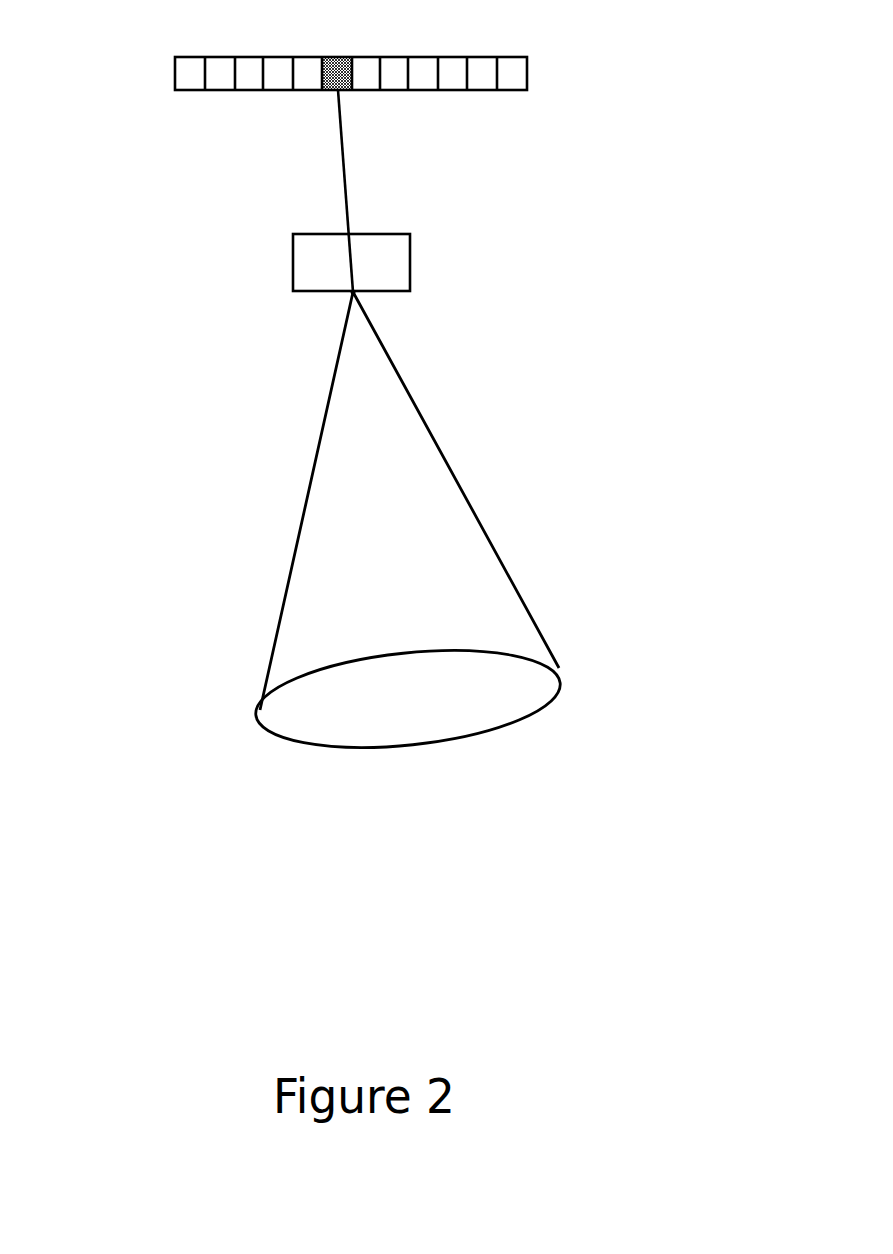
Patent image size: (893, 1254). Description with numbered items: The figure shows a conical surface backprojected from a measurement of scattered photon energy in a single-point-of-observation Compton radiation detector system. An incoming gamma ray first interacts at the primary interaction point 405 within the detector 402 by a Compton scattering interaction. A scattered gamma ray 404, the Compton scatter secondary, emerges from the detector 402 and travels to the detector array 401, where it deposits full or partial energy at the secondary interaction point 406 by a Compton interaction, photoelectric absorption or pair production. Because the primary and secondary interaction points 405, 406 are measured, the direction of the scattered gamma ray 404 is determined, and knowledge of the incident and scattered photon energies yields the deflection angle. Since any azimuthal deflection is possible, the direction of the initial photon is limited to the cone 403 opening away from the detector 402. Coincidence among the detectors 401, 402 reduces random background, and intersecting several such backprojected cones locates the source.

The detector array 401 is at (289, 72).
The detector 402 is at (298, 262).
The cone 403 is at (408, 526).
The scattered gamma ray 404 is at (379, 191).
The primary interaction point 405 is at (353, 292).
The secondary interaction point 406 is at (323, 91).